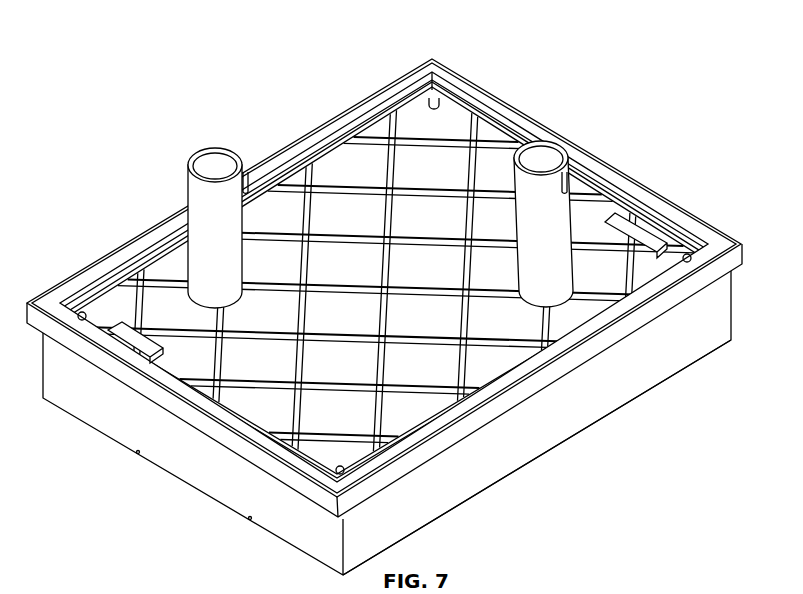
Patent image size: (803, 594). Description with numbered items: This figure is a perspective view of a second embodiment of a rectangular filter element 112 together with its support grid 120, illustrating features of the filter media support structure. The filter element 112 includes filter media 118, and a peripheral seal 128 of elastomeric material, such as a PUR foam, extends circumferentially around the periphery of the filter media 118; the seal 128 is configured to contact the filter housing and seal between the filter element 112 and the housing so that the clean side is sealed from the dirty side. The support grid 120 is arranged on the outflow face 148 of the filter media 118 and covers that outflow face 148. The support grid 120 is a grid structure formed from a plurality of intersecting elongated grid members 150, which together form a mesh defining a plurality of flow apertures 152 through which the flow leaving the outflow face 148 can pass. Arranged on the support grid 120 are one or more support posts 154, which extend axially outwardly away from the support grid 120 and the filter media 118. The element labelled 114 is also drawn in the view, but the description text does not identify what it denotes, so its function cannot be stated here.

The filter element 112 is at (604, 74).
The rim side wall 114 is at (732, 278).
The filter media 118 is at (688, 346).
The support grid 120 is at (213, 370).
The peripheral seal 128 is at (641, 194).
The outflow face 148 is at (347, 175).
The grid members 150 is at (384, 346).
The flow apertures 152 is at (445, 329).
The support posts 154 is at (200, 212).